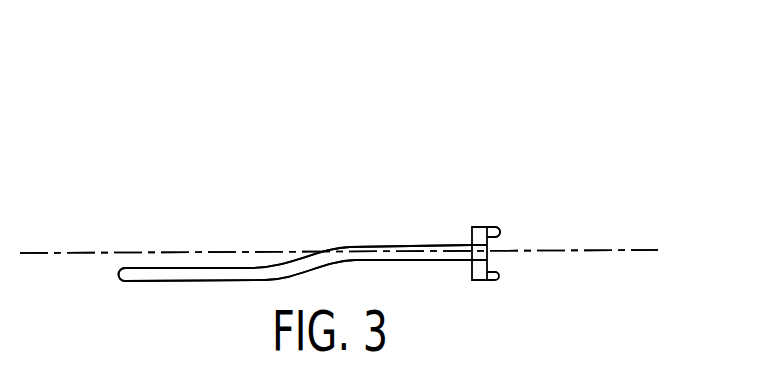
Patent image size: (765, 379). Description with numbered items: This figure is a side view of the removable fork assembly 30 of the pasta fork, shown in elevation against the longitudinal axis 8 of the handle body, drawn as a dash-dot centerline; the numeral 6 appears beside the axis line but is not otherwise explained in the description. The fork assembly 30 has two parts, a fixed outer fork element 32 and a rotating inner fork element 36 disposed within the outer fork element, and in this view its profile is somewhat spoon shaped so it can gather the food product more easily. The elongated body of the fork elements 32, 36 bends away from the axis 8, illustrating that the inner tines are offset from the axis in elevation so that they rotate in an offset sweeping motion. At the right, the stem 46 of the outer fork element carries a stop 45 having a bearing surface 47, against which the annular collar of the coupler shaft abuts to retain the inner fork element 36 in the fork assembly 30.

The axis / needle axis line 6 is at (633, 250).
The longitudinal axis 8 is at (339, 251).
The fork assembly 30 is at (445, 143).
The outer fork element 32 is at (163, 268).
The inner fork element 36 is at (296, 263).
The stop 45 is at (482, 227).
The stem 46 is at (461, 262).
The bearing surface 47 is at (500, 239).